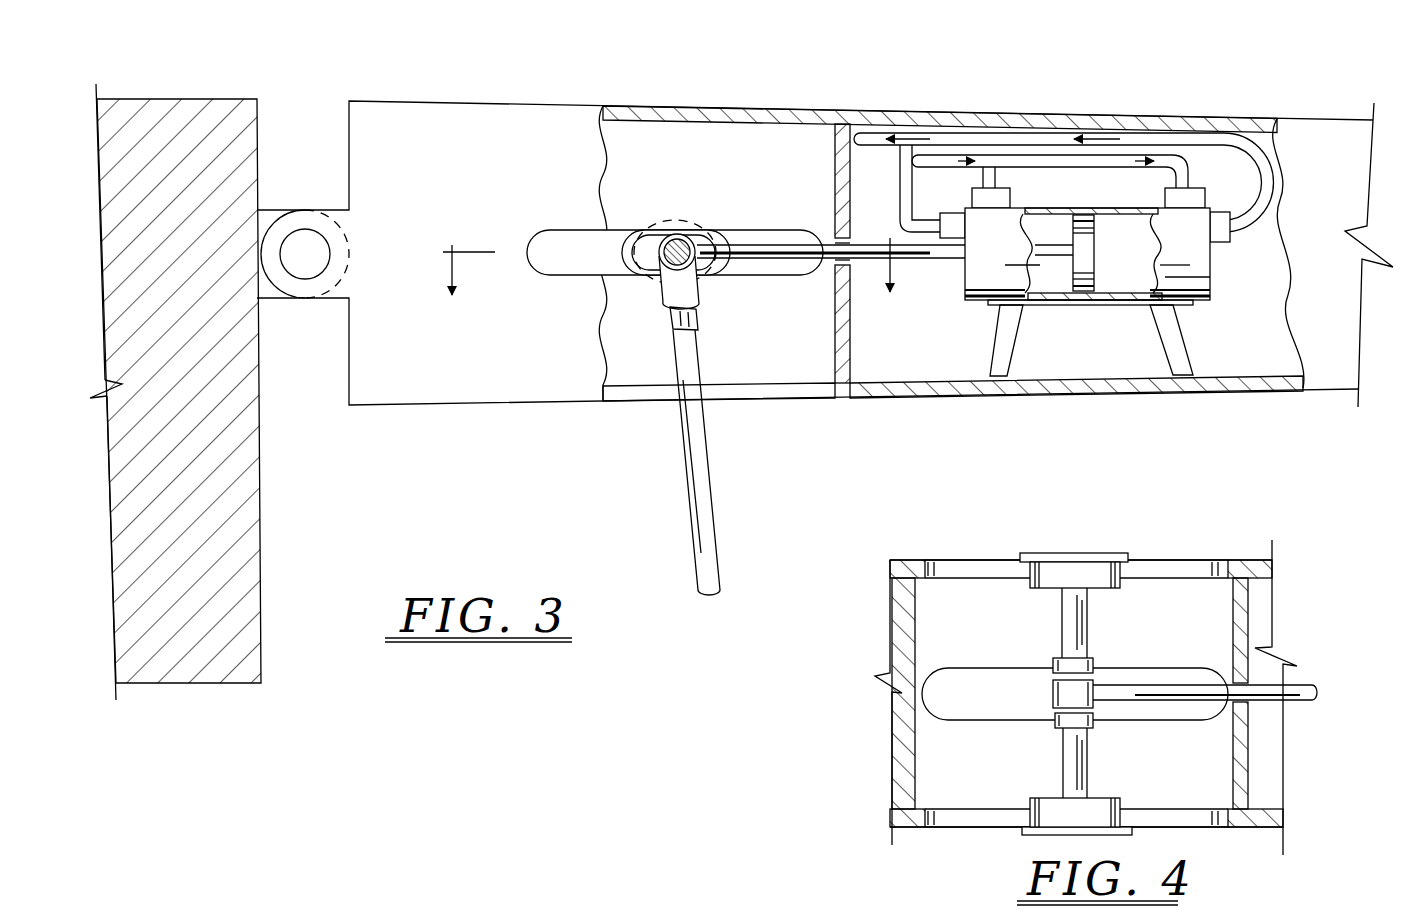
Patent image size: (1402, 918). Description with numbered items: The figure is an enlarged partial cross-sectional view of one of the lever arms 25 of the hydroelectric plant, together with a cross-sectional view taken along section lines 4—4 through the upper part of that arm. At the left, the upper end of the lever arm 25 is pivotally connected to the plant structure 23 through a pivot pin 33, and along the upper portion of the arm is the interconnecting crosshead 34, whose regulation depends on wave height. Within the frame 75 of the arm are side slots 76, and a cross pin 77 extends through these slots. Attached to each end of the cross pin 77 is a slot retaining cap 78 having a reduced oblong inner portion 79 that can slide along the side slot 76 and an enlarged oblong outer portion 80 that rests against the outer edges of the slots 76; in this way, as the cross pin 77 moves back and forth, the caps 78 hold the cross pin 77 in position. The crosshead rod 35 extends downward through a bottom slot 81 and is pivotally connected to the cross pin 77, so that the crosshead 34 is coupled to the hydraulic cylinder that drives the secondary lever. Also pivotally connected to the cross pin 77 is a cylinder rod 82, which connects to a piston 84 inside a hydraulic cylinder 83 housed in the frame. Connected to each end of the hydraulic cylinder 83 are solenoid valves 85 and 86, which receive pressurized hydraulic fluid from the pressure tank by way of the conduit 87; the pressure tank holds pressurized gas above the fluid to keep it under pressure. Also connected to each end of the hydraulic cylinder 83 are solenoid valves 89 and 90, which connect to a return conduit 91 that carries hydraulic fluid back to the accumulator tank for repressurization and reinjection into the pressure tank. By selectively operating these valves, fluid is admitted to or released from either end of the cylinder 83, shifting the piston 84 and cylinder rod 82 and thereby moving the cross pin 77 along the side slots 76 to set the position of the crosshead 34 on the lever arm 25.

In FIG. 3, the plant structure 23 is at (190, 99).
In FIG. 3, the lever arm 25 is at (935, 104).
In FIG. 3, the pivot pin 33 is at (312, 272).
In FIG. 3, the crosshead 34 is at (658, 219).
In FIG. 4, the crosshead 34 is at (1028, 727).
In FIG. 3, the crosshead rod 35 is at (712, 481).
In FIG. 3, the section lines 4— 4 is at (670, 280).
In FIG. 3, the frame 75 is at (1175, 120).
In FIG. 3, the side slots 76 is at (560, 230).
In FIG. 4, the side slots 76 is at (960, 567).
In FIG. 3, the cross pin 77 is at (669, 240).
In FIG. 4, the cross pin 77 is at (1076, 625).
In FIG. 3, the slot retaining cap 78 is at (701, 215).
In FIG. 4, the slot retaining cap 78 is at (1118, 684).
In FIG. 3, the reduced oblong inner portion 79 is at (633, 262).
In FIG. 4, the reduced oblong inner portion 79 is at (1042, 590).
In FIG. 3, the enlarged oblong outer portion 80 is at (622, 251).
In FIG. 4, the enlarged oblong outer portion 80 is at (1031, 560).
In FIG. 3, the bottom slot 81 is at (807, 392).
In FIG. 4, the bottom slot 81 is at (960, 668).
In FIG. 3, the cylinder rod 82 is at (937, 259).
In FIG. 4, the cylinder rod 82 is at (1304, 701).
In FIG. 3, the hydraulic cylinder 83 is at (1090, 328).
In FIG. 3, the piston 84 is at (1095, 253).
In FIG. 3, the solenoid valve 85 is at (1010, 196).
In FIG. 3, the solenoid valve 86 is at (1205, 194).
In FIG. 3, the conduit 87 is at (1097, 160).
In FIG. 3, the solenoid valve 89 is at (946, 213).
In FIG. 3, the solenoid valve 90 is at (1223, 242).
In FIG. 3, the return conduit 91 is at (1017, 133).